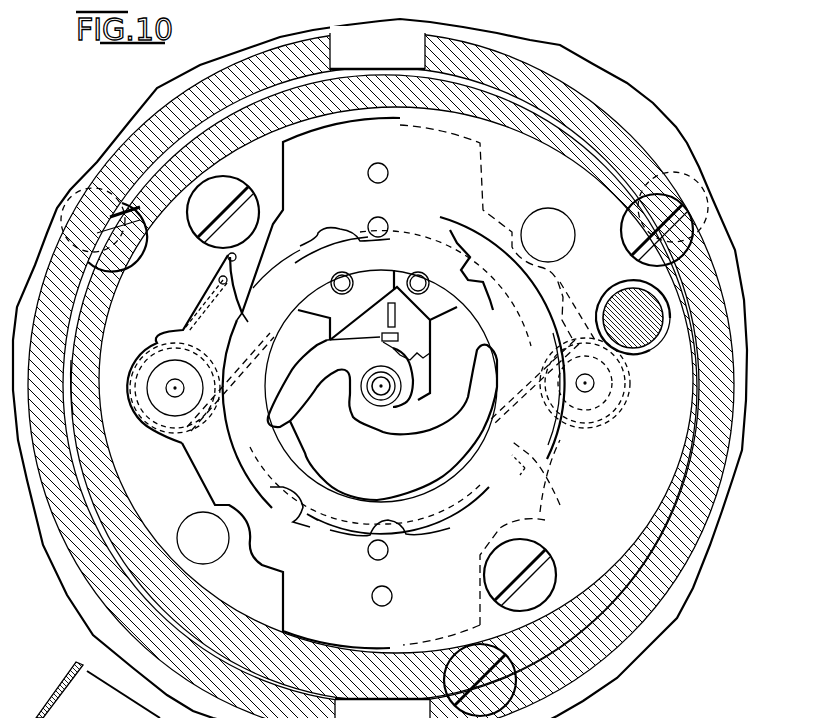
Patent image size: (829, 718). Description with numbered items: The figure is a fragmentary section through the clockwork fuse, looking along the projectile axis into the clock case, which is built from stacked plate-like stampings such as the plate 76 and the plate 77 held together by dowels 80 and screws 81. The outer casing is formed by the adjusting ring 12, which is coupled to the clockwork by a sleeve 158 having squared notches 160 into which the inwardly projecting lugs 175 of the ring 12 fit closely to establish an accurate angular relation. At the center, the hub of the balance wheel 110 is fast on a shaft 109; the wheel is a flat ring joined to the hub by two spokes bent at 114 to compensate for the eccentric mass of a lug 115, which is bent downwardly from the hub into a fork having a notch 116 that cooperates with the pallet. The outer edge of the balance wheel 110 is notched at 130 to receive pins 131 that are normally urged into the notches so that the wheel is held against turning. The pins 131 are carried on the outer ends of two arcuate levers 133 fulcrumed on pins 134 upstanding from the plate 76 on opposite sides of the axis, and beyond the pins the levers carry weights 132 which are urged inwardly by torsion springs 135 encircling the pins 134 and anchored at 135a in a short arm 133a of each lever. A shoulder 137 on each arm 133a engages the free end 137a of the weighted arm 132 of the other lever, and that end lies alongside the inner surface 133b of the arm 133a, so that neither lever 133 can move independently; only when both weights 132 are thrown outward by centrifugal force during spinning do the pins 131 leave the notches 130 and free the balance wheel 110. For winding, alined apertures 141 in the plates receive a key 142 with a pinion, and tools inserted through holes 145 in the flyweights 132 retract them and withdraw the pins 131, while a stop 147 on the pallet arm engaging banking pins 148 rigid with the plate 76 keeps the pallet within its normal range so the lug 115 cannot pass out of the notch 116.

The adjusting ring 12 is at (204, 72).
The plate 76 is at (78, 337).
The plate 77 is at (597, 173).
The dowels 80 is at (549, 212).
The screws 81 is at (632, 213).
The shaft 109 is at (385, 392).
The balance wheel 110 is at (540, 402).
The bent spokes 114 is at (318, 355).
The lug 115 is at (398, 350).
The notch 116 is at (382, 335).
The notches 130 is at (348, 230).
The pins 131 is at (382, 224).
The weights 132 is at (283, 160).
The levers 133 is at (207, 488).
The short arm 133a is at (213, 286).
The inner surface 133b is at (227, 257).
The pins 134 is at (167, 410).
The torsion springs 135 is at (183, 330).
The spring anchor 135a is at (219, 280).
The shoulder 137 is at (239, 313).
The free end 137a is at (258, 290).
The apertures 141 is at (652, 340).
The key 142 is at (650, 352).
The holes 145 is at (378, 164).
The stop 147 is at (393, 283).
The banking pins 148 is at (342, 275).
The sleeve 158 is at (593, 113).
The notches 160 is at (428, 52).
The lugs 175 is at (418, 68).